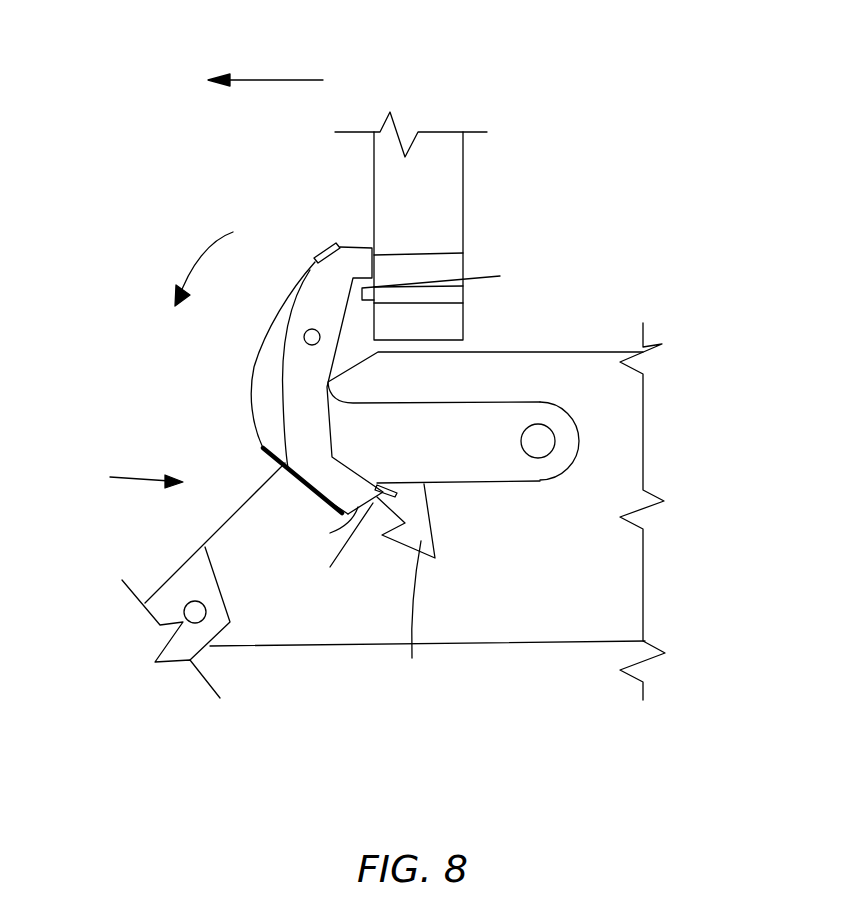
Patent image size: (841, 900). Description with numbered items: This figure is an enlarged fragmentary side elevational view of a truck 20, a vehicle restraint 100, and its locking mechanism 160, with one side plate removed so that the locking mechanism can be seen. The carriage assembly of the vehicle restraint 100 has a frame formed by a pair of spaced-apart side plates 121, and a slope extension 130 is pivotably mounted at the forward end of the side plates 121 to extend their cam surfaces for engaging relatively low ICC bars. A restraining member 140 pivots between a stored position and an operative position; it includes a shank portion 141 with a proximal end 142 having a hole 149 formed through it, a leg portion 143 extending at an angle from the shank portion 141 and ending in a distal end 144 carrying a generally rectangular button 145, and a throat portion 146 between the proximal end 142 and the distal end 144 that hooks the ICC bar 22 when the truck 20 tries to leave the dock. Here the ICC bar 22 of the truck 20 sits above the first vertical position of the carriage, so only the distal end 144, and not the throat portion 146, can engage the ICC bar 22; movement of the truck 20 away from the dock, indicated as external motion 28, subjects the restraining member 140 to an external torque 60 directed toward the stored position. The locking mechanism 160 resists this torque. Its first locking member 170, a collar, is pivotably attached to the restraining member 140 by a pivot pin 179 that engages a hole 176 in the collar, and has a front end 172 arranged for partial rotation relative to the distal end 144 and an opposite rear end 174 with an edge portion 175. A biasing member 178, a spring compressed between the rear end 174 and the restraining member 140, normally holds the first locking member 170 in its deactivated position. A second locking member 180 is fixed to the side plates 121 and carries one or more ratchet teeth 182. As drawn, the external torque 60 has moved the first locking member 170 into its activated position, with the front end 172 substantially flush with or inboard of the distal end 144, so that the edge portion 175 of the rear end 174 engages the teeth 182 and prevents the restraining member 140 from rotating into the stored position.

The truck 20 is at (435, 96).
The ICC bar 22 is at (447, 267).
The external motion 28 is at (290, 80).
The external force or torque 60 is at (203, 258).
The vehicle restraint 100 is at (112, 478).
The side plates 121 is at (617, 608).
The slope extension 130 is at (173, 588).
The restraining member 140 is at (482, 535).
The shank portion 141 is at (465, 417).
The proximal end 142 is at (577, 425).
The leg portion 143 is at (277, 383).
The distal end 144 is at (500, 276).
The button 145 is at (463, 303).
The throat portion 146 is at (328, 382).
The hole 149 is at (547, 452).
The locking mechanism 160 is at (275, 525).
The first locking member 170 is at (295, 363).
The front end 172 is at (374, 250).
The rear end 174 is at (310, 534).
The edge portion 175 is at (398, 491).
The hole 176 is at (305, 333).
The biasing member 178 is at (265, 477).
The pivot pin 179 is at (311, 330).
The second locking member 180 is at (390, 580).
The ratchet teeth 182 is at (382, 535).